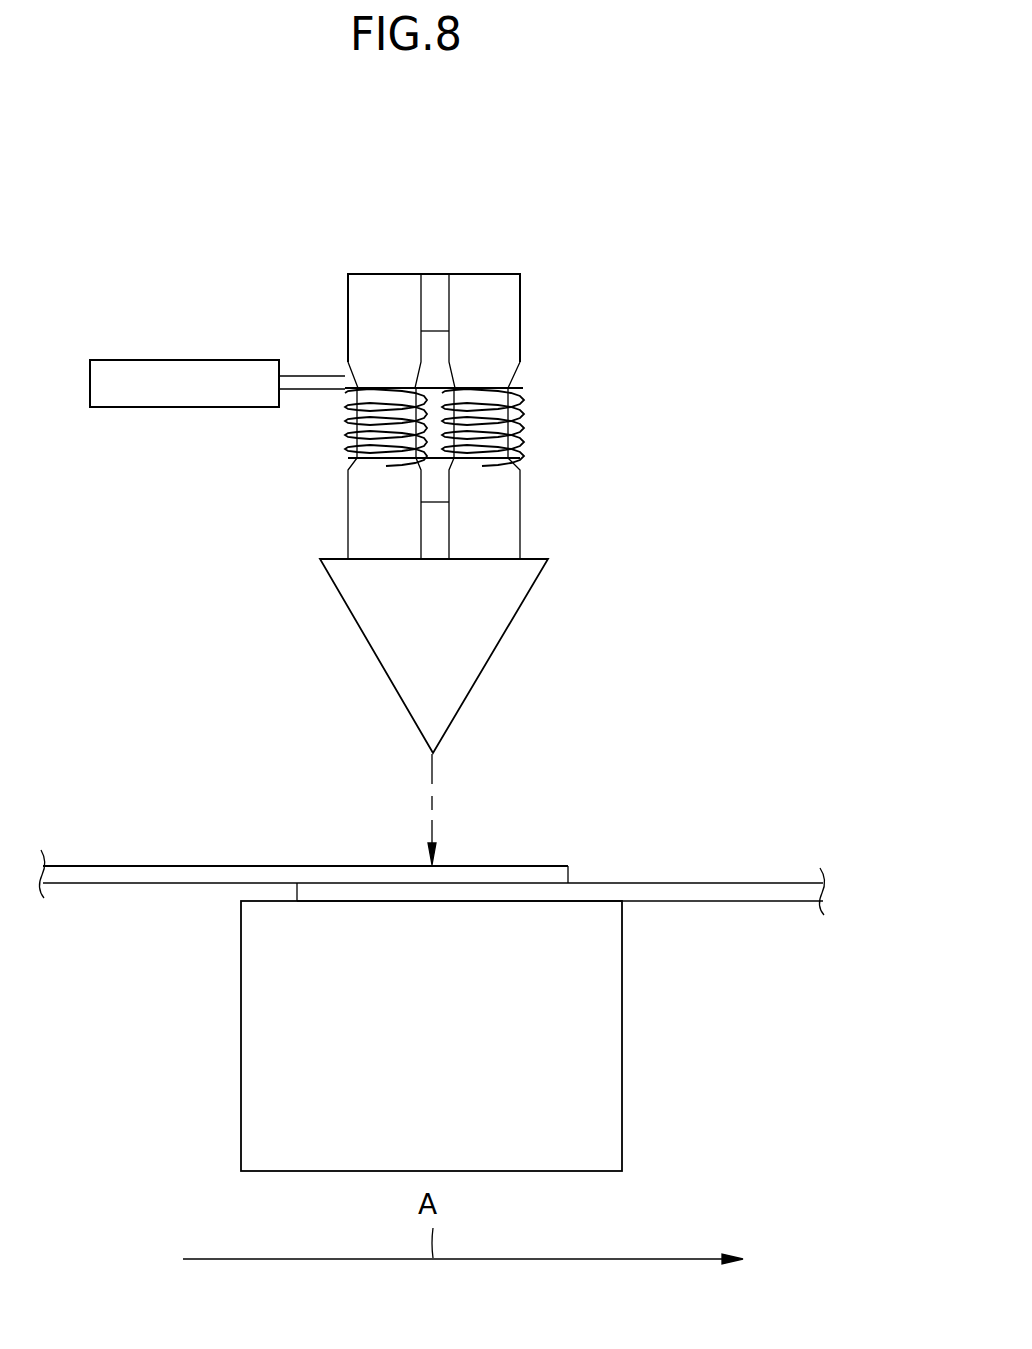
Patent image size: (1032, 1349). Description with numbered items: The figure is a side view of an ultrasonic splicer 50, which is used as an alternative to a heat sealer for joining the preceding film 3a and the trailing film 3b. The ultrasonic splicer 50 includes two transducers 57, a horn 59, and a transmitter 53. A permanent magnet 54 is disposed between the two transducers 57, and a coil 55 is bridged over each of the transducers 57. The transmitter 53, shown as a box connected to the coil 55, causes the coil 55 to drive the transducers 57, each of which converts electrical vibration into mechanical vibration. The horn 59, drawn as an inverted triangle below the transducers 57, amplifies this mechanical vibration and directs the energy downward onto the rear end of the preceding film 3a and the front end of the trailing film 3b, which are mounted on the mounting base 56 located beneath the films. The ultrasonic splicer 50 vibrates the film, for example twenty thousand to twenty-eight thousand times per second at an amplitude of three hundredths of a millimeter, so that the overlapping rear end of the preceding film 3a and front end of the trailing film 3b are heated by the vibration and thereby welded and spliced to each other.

The ultrasonic splicer 50 is at (218, 266).
The transmitter 53 is at (229, 358).
The permanent magnet 54 is at (433, 312).
The coil 55 is at (345, 445).
The mounting base 56 is at (600, 1081).
The transducer 57 is at (384, 288).
The horn 59 is at (482, 637).
The preceding film 3a is at (745, 890).
The trailing film 3b is at (148, 876).